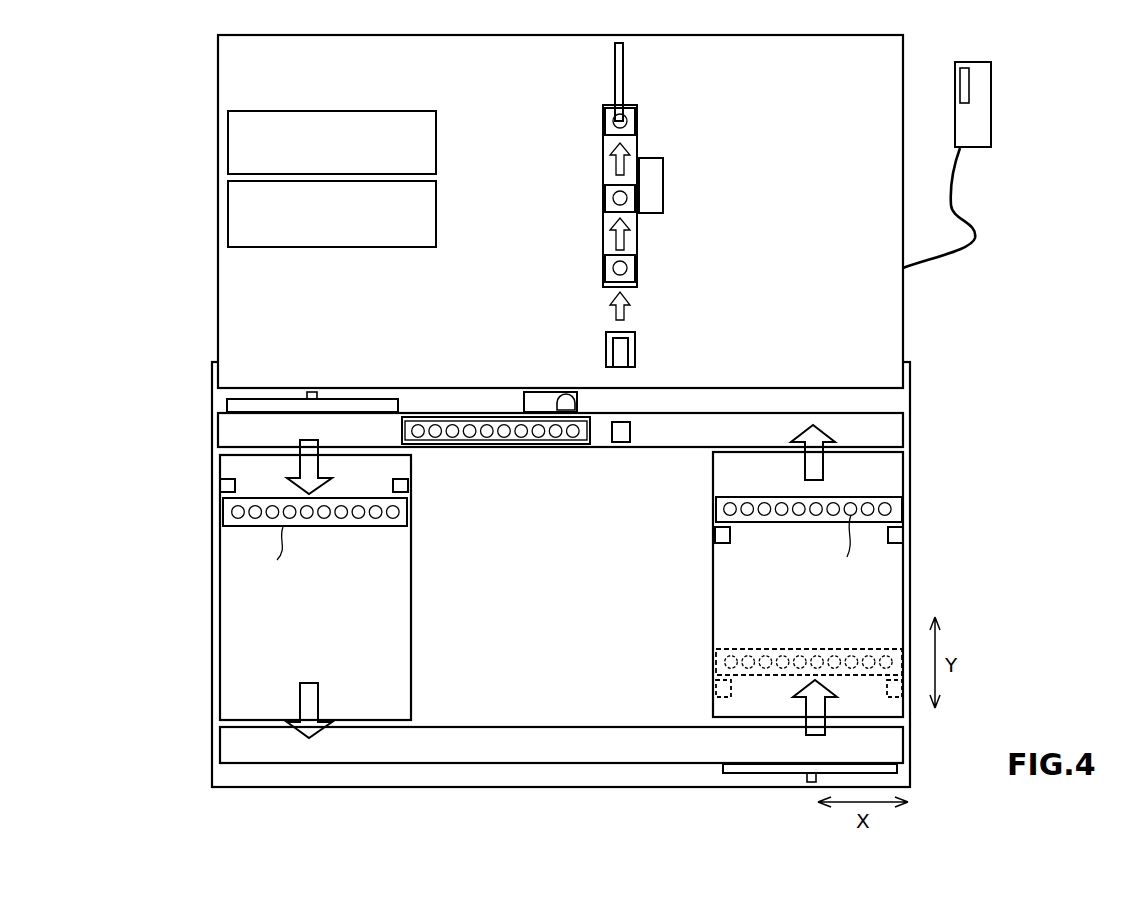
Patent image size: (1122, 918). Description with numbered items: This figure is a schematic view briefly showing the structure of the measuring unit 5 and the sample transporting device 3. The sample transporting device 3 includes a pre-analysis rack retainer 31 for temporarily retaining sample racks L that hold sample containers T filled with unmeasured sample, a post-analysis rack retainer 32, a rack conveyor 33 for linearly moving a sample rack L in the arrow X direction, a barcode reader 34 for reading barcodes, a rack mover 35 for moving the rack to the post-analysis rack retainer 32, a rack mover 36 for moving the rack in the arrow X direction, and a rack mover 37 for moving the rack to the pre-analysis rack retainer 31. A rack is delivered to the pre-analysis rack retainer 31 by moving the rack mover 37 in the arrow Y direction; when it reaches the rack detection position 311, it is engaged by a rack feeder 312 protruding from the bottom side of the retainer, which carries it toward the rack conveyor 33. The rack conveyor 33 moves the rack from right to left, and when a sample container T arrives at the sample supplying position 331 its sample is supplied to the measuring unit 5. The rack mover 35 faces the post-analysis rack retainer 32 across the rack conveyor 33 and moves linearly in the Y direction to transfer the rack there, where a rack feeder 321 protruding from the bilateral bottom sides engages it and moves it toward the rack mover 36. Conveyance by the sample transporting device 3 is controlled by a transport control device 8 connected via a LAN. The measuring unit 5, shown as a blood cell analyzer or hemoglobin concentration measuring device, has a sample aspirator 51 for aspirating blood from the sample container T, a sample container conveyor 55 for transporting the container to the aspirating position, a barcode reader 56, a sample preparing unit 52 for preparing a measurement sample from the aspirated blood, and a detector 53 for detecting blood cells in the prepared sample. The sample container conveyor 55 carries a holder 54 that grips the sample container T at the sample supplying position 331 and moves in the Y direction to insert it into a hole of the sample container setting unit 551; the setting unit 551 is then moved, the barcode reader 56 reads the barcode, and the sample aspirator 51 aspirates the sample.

The sample transporting device 3 is at (952, 522).
The measuring unit 5 is at (218, 178).
The transport control device 8 is at (977, 148).
The pre-analysis rack retainer 31 is at (905, 578).
The rack detection position 311 is at (790, 648).
The rack feeder 312 is at (713, 535).
The post-analysis rack retainer 32 is at (411, 610).
The rack feeder 321 is at (408, 487).
The rack conveyor 33 is at (905, 425).
The sample supplying position 331 is at (631, 432).
The barcode reader 34 is at (524, 402).
The rack mover 35 is at (227, 405).
The rack mover 36 is at (548, 750).
The rack mover 37 is at (897, 770).
The sample aspirator 51 is at (624, 70).
The sample preparing unit 52 is at (327, 247).
The detector 53 is at (352, 109).
The sample container holder 54 is at (636, 350).
The sample container conveyor 55 is at (603, 224).
The sample container setting unit 551 is at (637, 273).
The barcode reader 56 is at (663, 165).